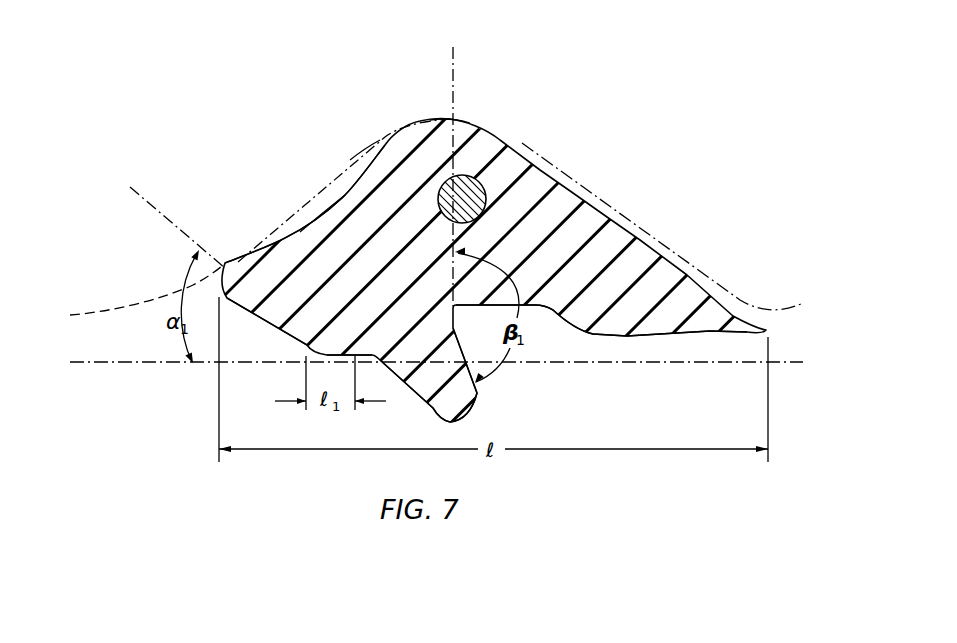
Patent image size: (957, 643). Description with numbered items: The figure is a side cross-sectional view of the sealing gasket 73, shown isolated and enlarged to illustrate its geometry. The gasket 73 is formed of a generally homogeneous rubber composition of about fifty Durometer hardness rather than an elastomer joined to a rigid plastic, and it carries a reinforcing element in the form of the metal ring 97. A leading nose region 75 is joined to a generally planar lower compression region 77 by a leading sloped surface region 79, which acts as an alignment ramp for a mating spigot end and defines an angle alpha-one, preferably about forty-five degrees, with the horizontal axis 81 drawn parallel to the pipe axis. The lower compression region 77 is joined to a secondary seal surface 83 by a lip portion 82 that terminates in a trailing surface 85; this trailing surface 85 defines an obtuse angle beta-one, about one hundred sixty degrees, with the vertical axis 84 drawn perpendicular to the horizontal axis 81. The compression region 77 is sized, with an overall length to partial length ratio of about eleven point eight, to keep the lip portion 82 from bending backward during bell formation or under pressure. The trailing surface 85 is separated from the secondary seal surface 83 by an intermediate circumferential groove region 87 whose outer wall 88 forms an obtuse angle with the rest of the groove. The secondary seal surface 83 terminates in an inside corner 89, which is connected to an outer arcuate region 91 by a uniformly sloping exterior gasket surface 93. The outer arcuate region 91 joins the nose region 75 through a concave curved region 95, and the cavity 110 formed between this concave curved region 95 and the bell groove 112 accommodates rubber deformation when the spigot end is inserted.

The gasket 73 is at (640, 253).
The leading nose region 75 is at (295, 238).
The lower compression region 77 is at (327, 358).
The leading sloped surface region 79 is at (238, 313).
The horizontal axis 81 is at (138, 362).
The lip portion 82 is at (448, 403).
The secondary seal surface 83 is at (652, 337).
The vertical axis 84 is at (452, 62).
The trailing surface 85 is at (477, 388).
The intermediate circumferential groove region 87 is at (480, 308).
The outer wall 88 is at (564, 327).
The inside corner 89 is at (753, 350).
The outer arcuate region 91 is at (463, 120).
The uniformly sloping exterior gasket surface 93 is at (602, 200).
The concave curved region 95 is at (360, 195).
The metal ring 97 is at (487, 190).
The cavity 110 is at (316, 221).
The bell groove 112 is at (358, 155).